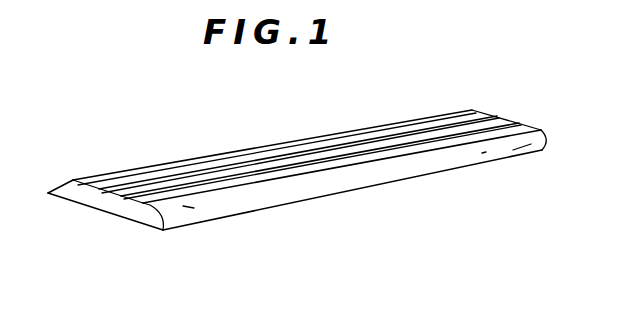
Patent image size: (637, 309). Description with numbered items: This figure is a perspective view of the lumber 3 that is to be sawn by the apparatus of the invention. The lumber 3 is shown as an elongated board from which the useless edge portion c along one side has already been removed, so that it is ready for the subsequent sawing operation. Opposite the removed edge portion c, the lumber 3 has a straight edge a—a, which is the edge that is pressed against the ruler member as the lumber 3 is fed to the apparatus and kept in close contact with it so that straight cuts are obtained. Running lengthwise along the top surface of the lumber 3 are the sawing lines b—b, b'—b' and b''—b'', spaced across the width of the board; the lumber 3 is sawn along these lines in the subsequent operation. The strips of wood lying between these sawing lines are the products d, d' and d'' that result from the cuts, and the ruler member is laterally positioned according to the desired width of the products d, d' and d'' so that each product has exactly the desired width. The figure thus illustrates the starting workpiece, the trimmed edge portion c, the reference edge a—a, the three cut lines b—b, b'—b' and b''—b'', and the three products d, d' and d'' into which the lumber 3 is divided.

The lumber 3 is at (307, 130).
The straight edge a— a is at (76, 183).
The sawing line b— b is at (298, 167).
The sawing line b'— b' is at (321, 170).
The sawing line b''— b'' is at (344, 174).
The useless edge portion c is at (66, 186).
The product d is at (281, 154).
The product d' is at (307, 160).
The product d'' is at (330, 166).